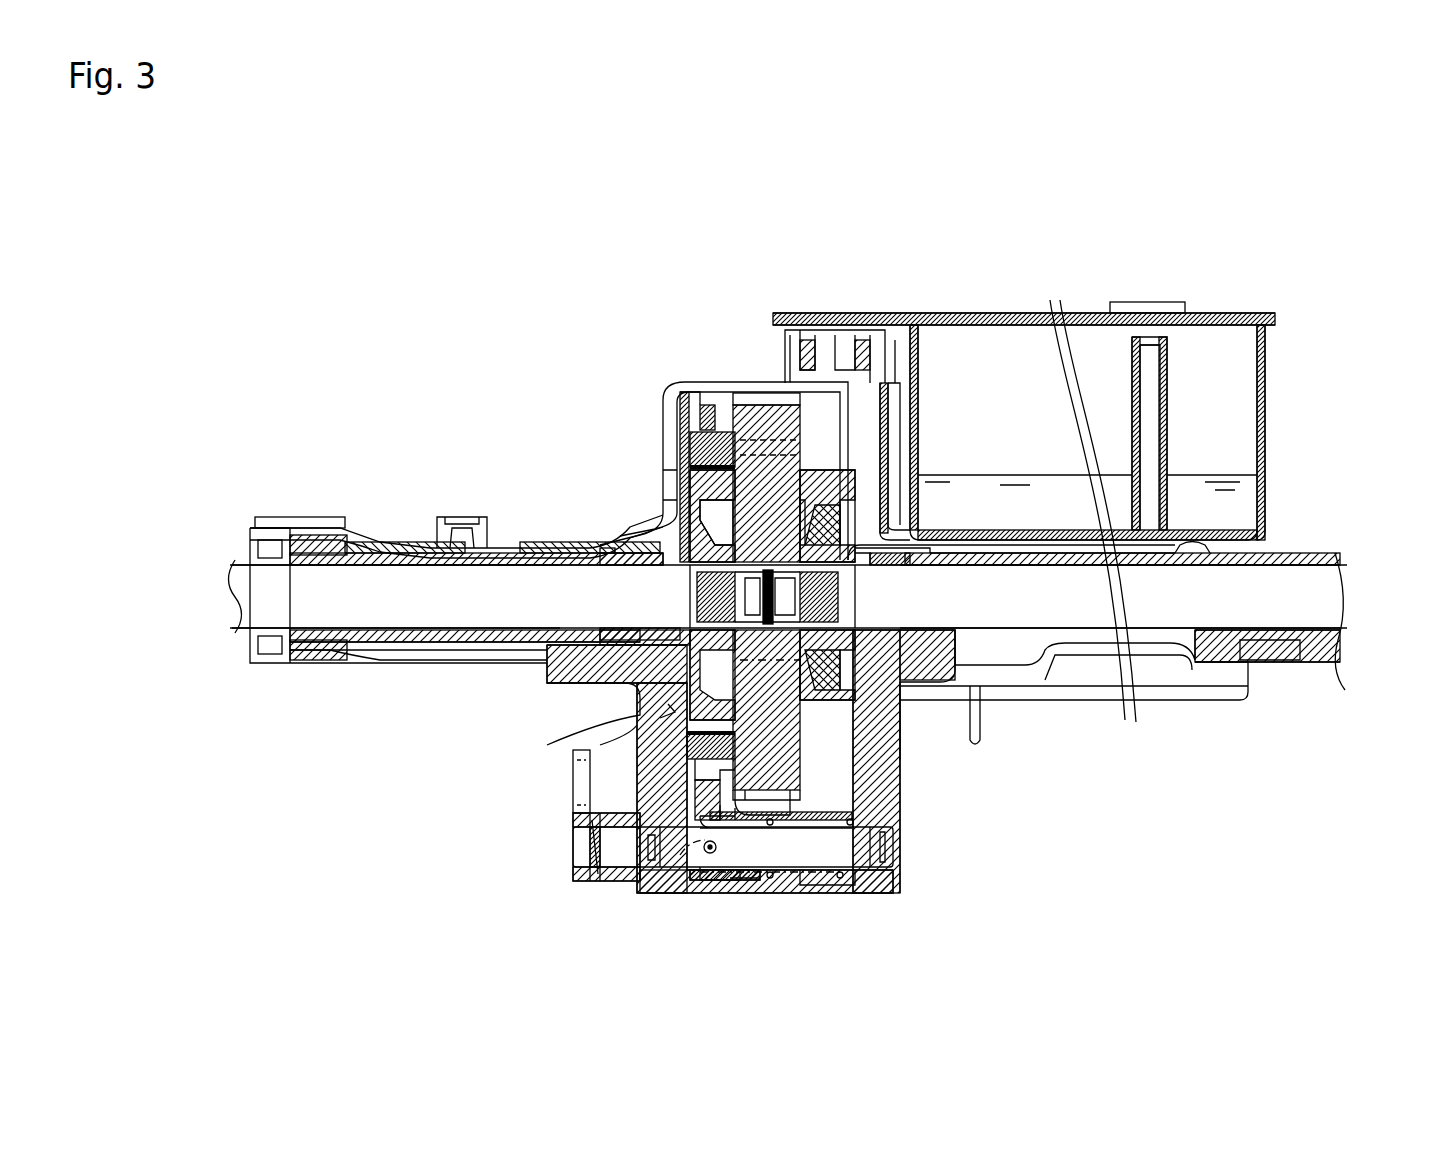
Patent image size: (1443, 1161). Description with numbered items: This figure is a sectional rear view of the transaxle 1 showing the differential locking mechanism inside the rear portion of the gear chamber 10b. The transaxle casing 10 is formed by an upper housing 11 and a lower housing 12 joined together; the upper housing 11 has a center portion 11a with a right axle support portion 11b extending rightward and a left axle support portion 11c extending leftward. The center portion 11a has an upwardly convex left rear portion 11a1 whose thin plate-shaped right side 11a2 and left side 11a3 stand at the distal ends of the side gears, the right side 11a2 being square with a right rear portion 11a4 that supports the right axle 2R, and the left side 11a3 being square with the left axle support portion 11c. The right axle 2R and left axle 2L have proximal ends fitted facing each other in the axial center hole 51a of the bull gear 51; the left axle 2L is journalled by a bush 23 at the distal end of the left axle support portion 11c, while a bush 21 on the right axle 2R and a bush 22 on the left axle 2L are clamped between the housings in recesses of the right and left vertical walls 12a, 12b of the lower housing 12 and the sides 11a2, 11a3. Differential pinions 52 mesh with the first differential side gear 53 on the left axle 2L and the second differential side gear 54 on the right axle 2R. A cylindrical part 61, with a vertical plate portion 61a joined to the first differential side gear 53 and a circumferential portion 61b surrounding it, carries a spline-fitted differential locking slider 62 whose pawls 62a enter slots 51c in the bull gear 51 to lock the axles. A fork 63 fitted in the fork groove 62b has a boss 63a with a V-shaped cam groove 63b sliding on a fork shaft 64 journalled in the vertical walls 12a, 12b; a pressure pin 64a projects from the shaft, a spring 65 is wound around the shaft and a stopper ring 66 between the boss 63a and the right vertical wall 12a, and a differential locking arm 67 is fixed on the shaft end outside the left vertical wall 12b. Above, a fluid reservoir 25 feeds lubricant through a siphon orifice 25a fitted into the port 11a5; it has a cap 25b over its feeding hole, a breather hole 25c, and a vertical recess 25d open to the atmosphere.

The transaxle 1 is at (608, 247).
The transaxle casing 10 is at (517, 387).
The gear chamber 10b is at (915, 400).
The upper housing 11 is at (503, 653).
The center portion 11a is at (968, 545).
The left rear portion 11a1 is at (728, 380).
The right side 11a2 is at (880, 455).
The left side 11a3 is at (695, 505).
The right rear portion 11a4 is at (1085, 560).
The port 11a5 is at (795, 372).
The right axle support portion 11b is at (1300, 555).
The left axle support portion 11c is at (425, 552).
The lower housing 12 is at (548, 690).
The right vertical wall 12a is at (900, 778).
The left vertical wall 12b is at (575, 834).
The left axle 2L is at (247, 591).
The right axle 2R is at (1305, 600).
The bush 21 is at (898, 573).
The bush 22 is at (650, 578).
The bush 23 is at (325, 553).
The fluid reservoir 25 is at (1270, 380).
The orifice 25a is at (905, 358).
The cap 25b is at (1152, 312).
The breather hole 25c is at (1165, 353).
The vertical recess 25d is at (1152, 420).
The bull gear 51 is at (810, 860).
The axial center hole 51a is at (820, 592).
The slots 51c is at (735, 755).
The differential pinions 52 is at (790, 692).
The first differential side gear 53 is at (700, 515).
The second differential side gear 54 is at (828, 505).
The cylindrical part 61 is at (650, 777).
The vertical plate portion 61a is at (640, 700).
The circumferential portion 61b is at (675, 462).
The differential locking slider 62 is at (705, 447).
The pawls 62a is at (858, 806).
The fork groove 62b is at (705, 430).
The fork 63 is at (690, 395).
The boss 63a is at (753, 880).
The cam groove 63b is at (670, 897).
The fork shaft 64 is at (865, 850).
The pressure pin 64a is at (720, 873).
The spring 65 is at (773, 877).
The stopper ring 66 is at (843, 900).
The differential locking arm 67 is at (573, 782).